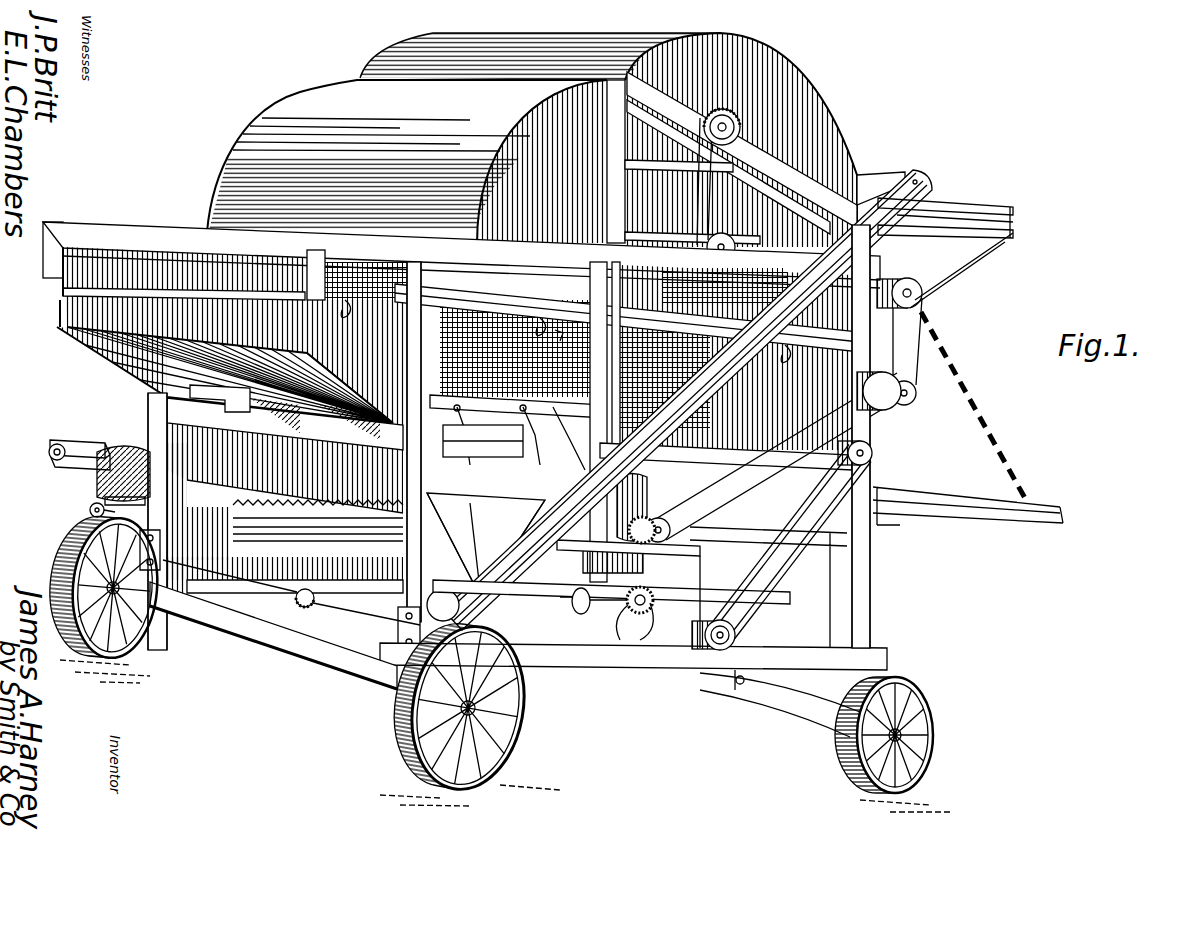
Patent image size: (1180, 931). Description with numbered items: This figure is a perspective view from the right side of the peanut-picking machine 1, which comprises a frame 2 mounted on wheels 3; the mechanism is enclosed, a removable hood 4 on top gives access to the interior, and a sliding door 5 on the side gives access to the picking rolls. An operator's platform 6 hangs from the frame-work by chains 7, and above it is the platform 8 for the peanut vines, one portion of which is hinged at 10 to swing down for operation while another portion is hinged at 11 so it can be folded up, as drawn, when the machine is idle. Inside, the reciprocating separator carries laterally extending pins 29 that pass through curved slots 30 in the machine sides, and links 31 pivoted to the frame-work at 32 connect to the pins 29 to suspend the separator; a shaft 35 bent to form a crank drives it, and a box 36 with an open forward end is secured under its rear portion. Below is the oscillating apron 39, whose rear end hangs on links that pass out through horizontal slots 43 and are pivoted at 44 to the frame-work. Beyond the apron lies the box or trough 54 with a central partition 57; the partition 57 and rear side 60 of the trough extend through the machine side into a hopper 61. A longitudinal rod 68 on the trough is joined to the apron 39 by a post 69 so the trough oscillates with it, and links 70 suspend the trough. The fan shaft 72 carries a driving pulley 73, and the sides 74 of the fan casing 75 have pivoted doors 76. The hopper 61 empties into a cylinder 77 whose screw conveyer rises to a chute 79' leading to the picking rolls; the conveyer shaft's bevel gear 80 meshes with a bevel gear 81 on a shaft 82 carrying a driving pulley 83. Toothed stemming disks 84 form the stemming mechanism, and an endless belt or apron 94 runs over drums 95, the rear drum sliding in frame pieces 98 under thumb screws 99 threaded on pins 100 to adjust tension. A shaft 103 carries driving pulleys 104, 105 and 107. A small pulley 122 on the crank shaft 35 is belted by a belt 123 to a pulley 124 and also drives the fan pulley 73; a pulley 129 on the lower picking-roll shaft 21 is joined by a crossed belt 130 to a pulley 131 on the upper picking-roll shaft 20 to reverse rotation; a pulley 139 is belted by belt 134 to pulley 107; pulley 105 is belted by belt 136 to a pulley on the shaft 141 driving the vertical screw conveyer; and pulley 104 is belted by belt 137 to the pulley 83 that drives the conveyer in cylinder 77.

The machine 1 is at (300, 41).
The frame 2 is at (867, 575).
The wheels 3 is at (75, 554).
The removable hood 4 is at (795, 72).
The sliding door 5 is at (702, 181).
The platform for the operator 6 is at (950, 505).
The chains 7 is at (997, 436).
The platform 8 is at (977, 203).
The hinge 10 is at (985, 228).
The hinge 11 is at (1013, 218).
The shaft of the upper picking-roll 20 is at (745, 125).
The shaft of the lower picking roll 21 is at (690, 256).
The laterally extending pins 29 is at (627, 317).
The curved slots 30 is at (627, 318).
The links 31 is at (360, 308).
The pivot 32 is at (562, 333).
The crank shaft 35 is at (916, 394).
The box 36 is at (100, 343).
The oscillating apron 39 is at (285, 455).
The horizontal slots 43 is at (557, 471).
The pivot 44 is at (560, 413).
The box or trough 54 is at (317, 507).
The central partition 57 is at (452, 542).
The rear side 60 is at (486, 542).
The hopper 61 is at (515, 546).
The longitudinal rod 68 is at (245, 410).
The post 69 is at (420, 447).
The links 70 is at (460, 433).
The fan shaft 72 is at (677, 538).
The driving pulley 73 is at (672, 530).
The sides of the fan casing 74 is at (726, 457).
The fan casing 75 is at (587, 567).
The pivoted doors 76 is at (781, 456).
The cylinder 77 is at (687, 400).
The chute 79' is at (881, 171).
The bevel gear 80 is at (450, 598).
The bevel gear 81 is at (398, 652).
The shaft 82 is at (285, 584).
The driving pulley 83 is at (318, 610).
The stemming disks 84 is at (263, 507).
The endless belt or apron 94 is at (133, 452).
The drums 95 is at (104, 498).
The frame pieces 98 is at (77, 440).
The thumb screws 99 is at (52, 446).
The pins 100 is at (90, 512).
The shaft 103 is at (737, 634).
The driving pulley 104 is at (584, 614).
The driving pulley 105 is at (645, 614).
The driving pulley 107 is at (745, 624).
The small pulley 122 is at (914, 386).
The belt 123 is at (908, 338).
The pulley 124 is at (924, 298).
The pulley 129 is at (736, 251).
The belt 130 is at (770, 158).
The pulley 131 is at (740, 135).
The belt 134 is at (768, 585).
The belt 136 is at (622, 645).
The belt 137 is at (277, 615).
The pulley 139 is at (874, 453).
The shaft 141 is at (740, 686).